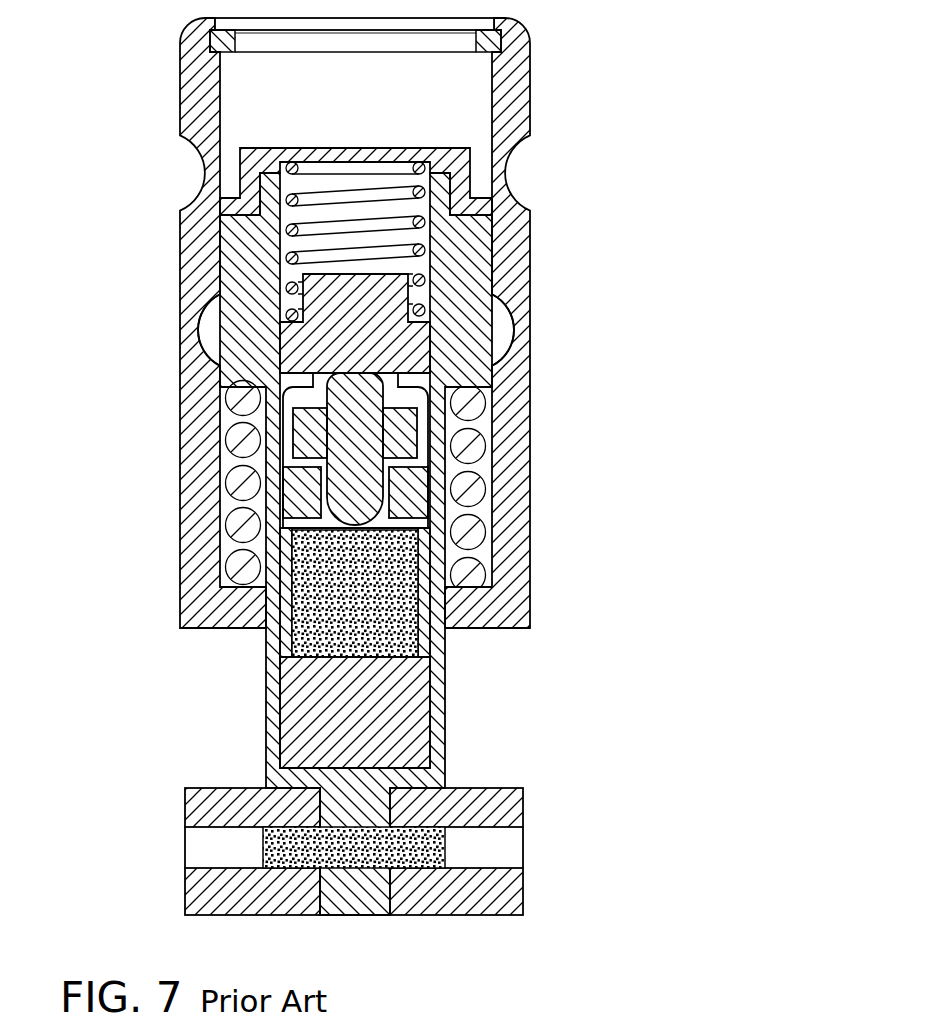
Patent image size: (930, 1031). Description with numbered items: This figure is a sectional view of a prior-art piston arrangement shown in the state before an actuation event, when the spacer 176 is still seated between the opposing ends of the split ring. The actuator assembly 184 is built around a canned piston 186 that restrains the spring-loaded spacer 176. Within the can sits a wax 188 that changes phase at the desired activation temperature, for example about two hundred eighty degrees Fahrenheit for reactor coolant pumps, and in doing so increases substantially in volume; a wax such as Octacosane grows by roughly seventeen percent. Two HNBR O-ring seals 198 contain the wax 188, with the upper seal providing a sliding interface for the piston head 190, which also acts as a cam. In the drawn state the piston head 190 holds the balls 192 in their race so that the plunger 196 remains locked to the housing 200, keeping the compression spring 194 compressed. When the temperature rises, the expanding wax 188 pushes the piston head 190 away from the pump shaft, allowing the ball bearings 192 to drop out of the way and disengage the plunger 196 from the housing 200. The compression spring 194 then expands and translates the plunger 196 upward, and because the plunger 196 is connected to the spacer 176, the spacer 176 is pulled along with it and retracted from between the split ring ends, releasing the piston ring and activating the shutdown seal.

The spacer 176 is at (437, 903).
The actuator assembly 184 is at (373, 497).
The canned piston 186 is at (438, 137).
The wax 188 is at (383, 633).
The piston head 190 is at (379, 339).
The balls 192 is at (505, 328).
The compression spring 194 is at (472, 492).
The plunger 196 is at (227, 253).
The O-ring seals 198 is at (307, 492).
The housing 200 is at (510, 433).